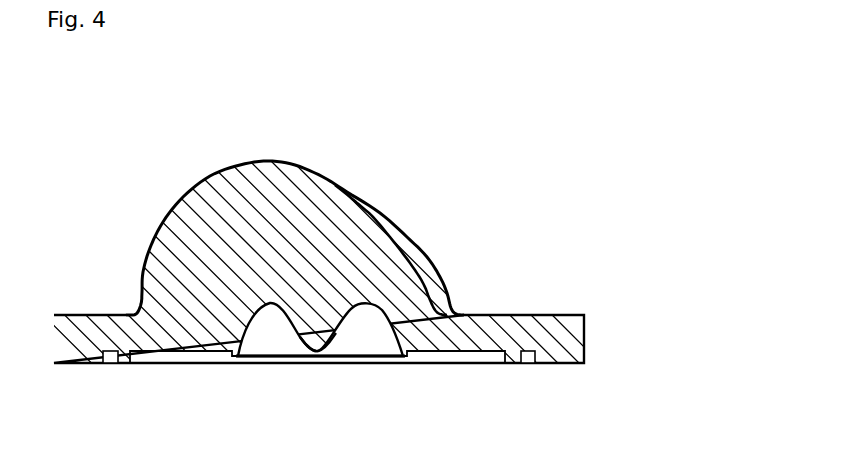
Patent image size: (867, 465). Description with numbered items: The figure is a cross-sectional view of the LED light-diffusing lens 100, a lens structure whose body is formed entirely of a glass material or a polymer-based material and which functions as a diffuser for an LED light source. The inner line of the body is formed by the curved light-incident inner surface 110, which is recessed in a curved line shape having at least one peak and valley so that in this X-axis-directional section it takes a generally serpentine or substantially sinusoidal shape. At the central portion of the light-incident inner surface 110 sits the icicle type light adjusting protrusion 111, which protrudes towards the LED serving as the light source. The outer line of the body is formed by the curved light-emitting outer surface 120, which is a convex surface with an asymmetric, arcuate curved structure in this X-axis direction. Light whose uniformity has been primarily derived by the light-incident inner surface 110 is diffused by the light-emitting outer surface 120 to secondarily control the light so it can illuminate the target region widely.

The LED light-diffusing lens 100 is at (304, 256).
The light-emitting outer surface 120 is at (268, 162).
The light-incident inner surface 110 is at (293, 336).
The light adjusting protrusion 111 is at (329, 352).